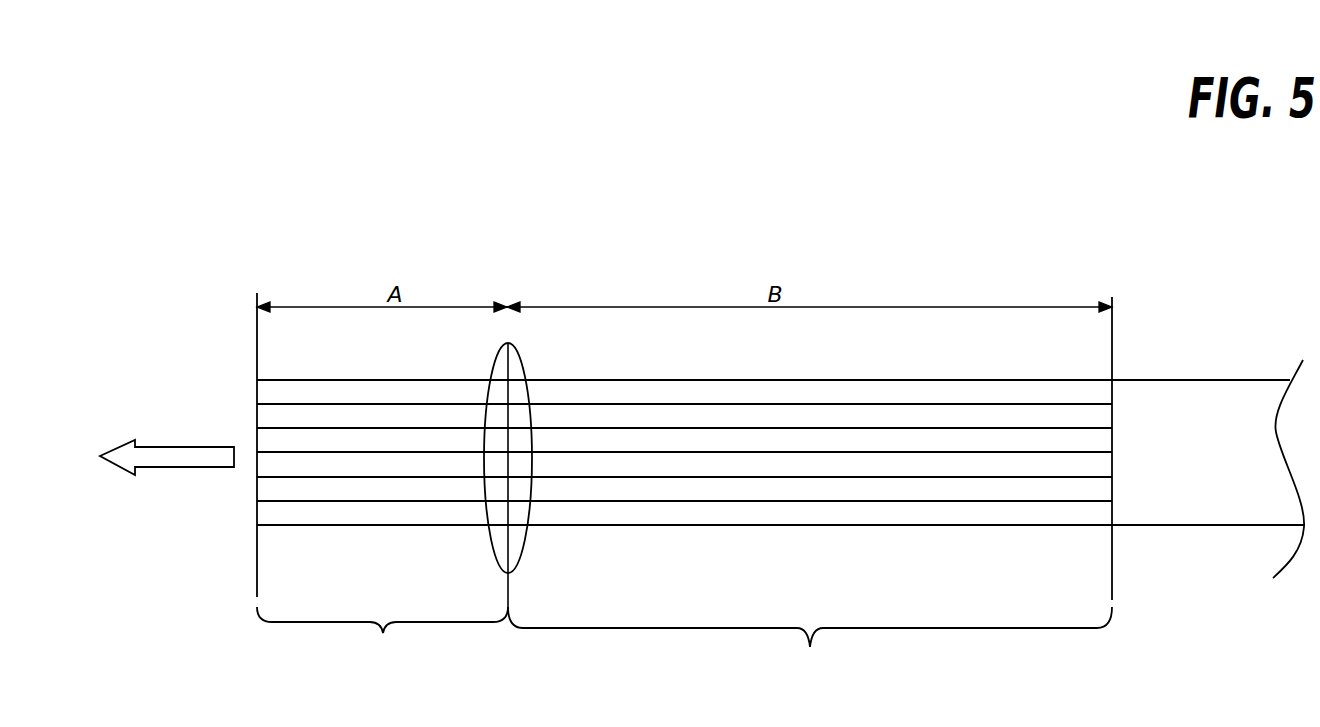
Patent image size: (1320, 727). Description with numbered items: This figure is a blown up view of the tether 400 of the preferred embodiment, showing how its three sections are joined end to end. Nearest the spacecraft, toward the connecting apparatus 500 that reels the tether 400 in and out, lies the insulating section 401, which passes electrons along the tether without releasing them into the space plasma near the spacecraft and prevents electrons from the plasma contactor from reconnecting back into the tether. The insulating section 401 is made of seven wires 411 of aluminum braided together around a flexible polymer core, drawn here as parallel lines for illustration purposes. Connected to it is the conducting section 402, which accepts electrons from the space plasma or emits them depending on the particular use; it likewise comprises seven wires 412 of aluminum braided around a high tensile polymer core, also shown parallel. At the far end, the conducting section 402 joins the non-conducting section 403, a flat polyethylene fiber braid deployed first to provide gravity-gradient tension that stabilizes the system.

The tether 400 is at (897, 288).
The insulating section 401 is at (357, 692).
The conducting section 402 is at (773, 694).
The non-conducting section 403 is at (1210, 403).
The wires of insulating section 411 is at (365, 525).
The wires of conducting section 412 is at (837, 528).
The connecting apparatus 500 is at (175, 447).